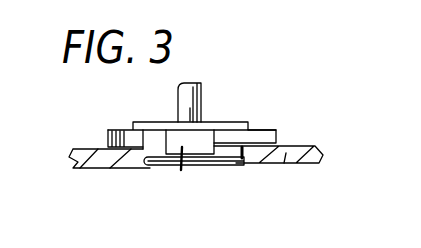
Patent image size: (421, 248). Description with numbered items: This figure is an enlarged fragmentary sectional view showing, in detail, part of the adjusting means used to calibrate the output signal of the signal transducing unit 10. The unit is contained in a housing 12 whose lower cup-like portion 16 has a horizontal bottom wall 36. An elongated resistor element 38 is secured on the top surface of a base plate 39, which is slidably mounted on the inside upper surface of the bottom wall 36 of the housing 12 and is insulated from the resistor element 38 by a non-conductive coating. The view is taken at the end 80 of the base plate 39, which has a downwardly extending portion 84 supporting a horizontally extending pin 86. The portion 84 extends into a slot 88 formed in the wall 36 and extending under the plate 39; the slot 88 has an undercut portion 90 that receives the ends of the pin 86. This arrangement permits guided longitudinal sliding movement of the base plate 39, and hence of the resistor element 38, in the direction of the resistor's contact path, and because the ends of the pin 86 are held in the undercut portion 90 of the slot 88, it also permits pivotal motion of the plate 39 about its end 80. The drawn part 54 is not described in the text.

The signal transducing unit 10 is at (333, 66).
The housing 12 is at (320, 163).
The lower portion of housing 16 is at (80, 171).
The bottom wall 36 is at (284, 163).
The resistor element 38 is at (232, 123).
The base plate 39 is at (277, 130).
The post 54 is at (199, 85).
The end of base plate 80 is at (108, 138).
The downwardly extending portion 84 is at (181, 170).
The pin 86 is at (155, 158).
The slot 88 is at (160, 151).
The undercut portion 90 is at (245, 166).